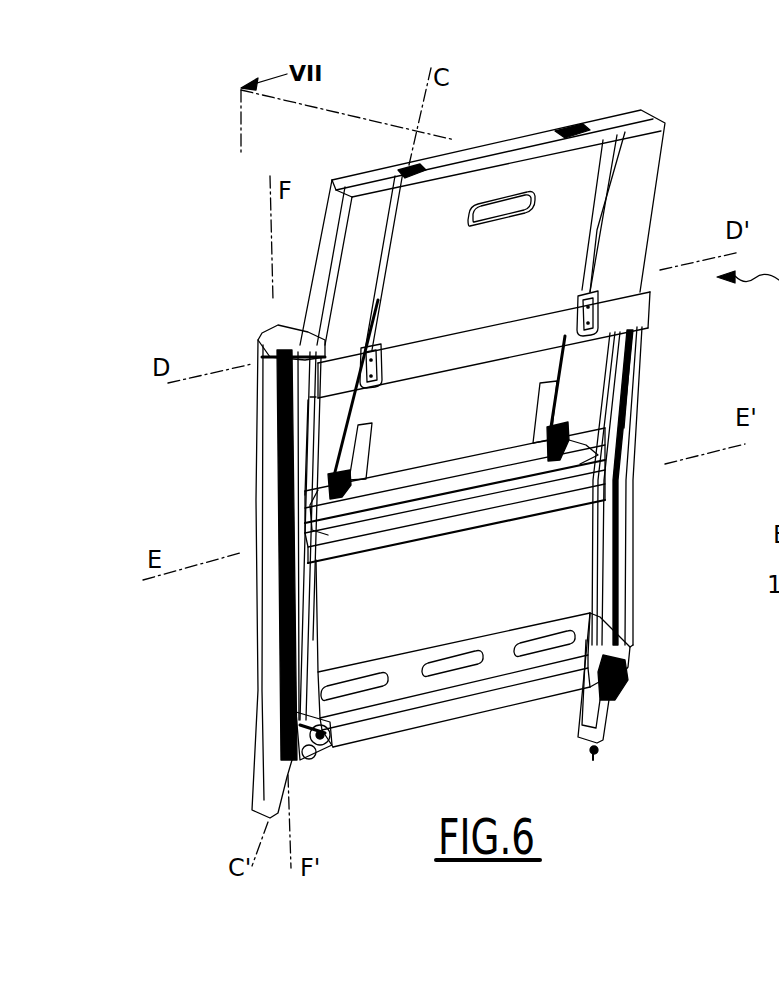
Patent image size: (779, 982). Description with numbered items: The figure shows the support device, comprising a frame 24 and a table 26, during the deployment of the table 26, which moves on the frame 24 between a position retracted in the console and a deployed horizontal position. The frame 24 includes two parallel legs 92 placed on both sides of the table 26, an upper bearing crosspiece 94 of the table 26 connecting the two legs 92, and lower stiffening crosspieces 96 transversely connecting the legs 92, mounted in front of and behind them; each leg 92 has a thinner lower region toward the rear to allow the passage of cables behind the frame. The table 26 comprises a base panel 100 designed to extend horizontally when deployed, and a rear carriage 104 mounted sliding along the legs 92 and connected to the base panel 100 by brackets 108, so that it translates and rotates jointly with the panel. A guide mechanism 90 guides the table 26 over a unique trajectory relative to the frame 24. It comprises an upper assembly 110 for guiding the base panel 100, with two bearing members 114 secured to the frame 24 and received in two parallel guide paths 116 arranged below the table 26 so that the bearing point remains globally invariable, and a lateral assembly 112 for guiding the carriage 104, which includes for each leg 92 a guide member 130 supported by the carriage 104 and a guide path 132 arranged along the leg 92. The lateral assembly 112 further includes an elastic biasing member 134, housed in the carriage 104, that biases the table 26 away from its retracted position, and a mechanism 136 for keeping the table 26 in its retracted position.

The frame 24 is at (228, 640).
The table 26 is at (684, 180).
The guide mechanism 90 is at (250, 280).
The legs 92 is at (262, 452).
The upper bearing crosspiece 94 is at (328, 378).
The lower stiffening crosspiece 96 is at (493, 660).
The base panel 100 is at (478, 183).
The rear carriage 104 is at (393, 544).
The brackets 108 is at (326, 515).
The upper assembly 110 is at (670, 303).
The lateral assembly 112 is at (660, 494).
The bearing member 114 is at (381, 362).
The guide path 116 is at (390, 244).
The guide member 130 is at (277, 550).
The guide path 132 is at (280, 607).
The elastic biasing member 134 is at (513, 497).
The mechanism for keeping the table in its retracted position 136 is at (343, 746).